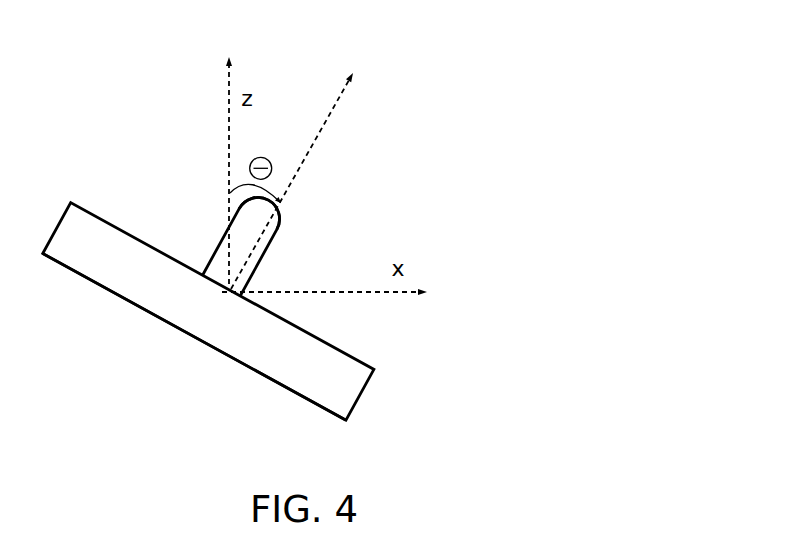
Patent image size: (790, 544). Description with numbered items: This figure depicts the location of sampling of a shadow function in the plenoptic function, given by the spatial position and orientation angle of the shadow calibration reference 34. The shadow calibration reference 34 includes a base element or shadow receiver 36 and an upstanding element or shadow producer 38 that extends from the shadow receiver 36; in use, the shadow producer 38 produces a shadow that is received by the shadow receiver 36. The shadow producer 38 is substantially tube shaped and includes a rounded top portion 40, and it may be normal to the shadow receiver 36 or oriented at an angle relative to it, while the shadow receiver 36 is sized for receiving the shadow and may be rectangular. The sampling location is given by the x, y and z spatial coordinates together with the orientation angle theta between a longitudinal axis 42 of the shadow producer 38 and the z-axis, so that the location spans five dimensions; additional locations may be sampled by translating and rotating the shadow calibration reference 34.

The shadow calibration reference 34 is at (365, 398).
The shadow receiver 36 is at (305, 378).
The shadow producer 38 is at (269, 246).
The rounded top portion 40 is at (280, 219).
The longitudinal axis 42 is at (327, 125).